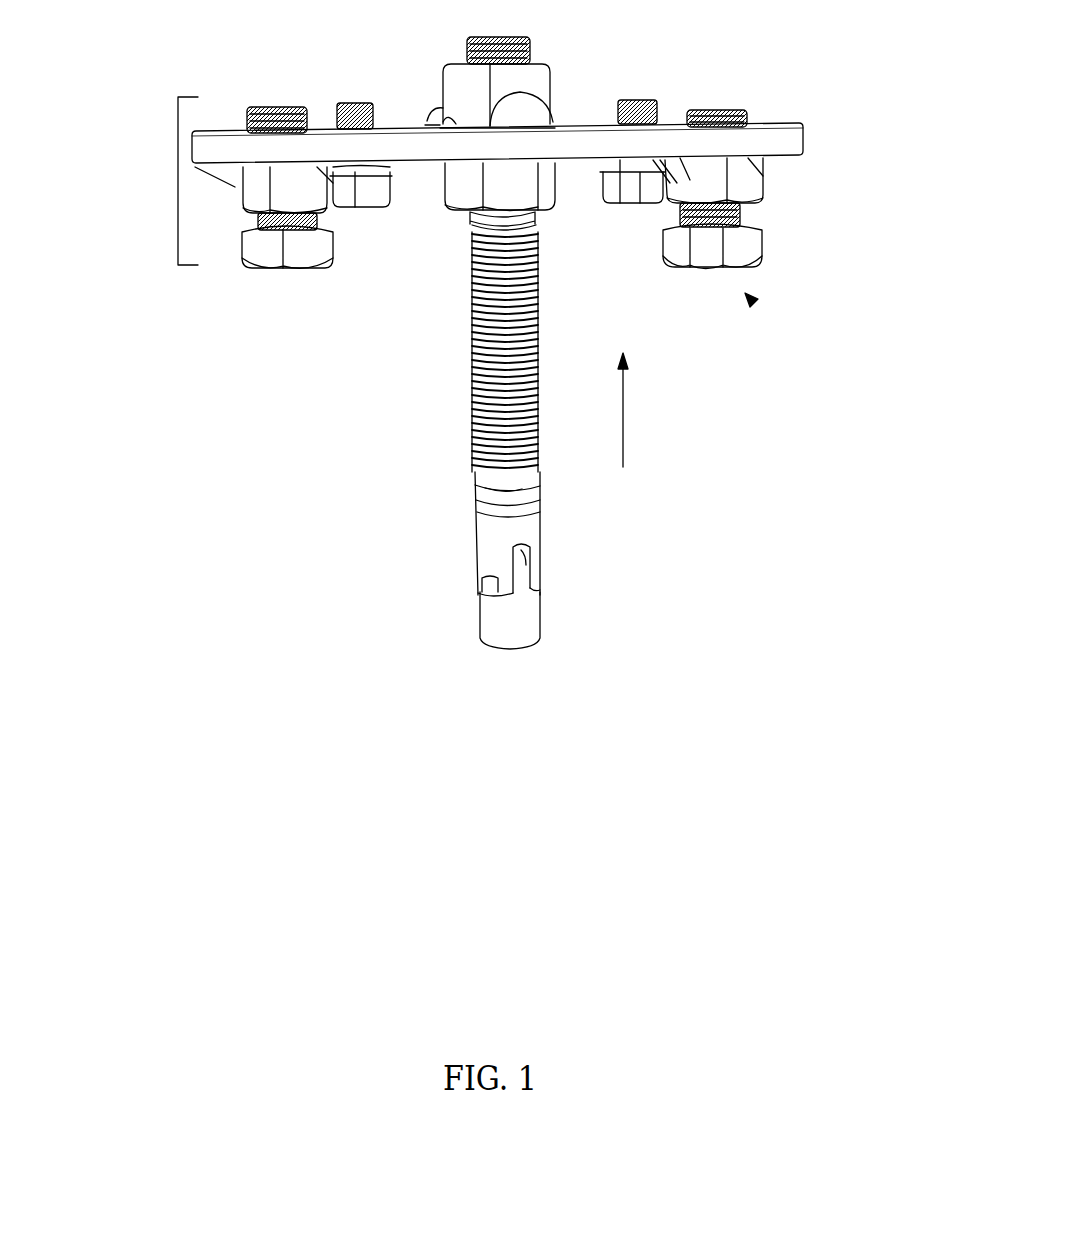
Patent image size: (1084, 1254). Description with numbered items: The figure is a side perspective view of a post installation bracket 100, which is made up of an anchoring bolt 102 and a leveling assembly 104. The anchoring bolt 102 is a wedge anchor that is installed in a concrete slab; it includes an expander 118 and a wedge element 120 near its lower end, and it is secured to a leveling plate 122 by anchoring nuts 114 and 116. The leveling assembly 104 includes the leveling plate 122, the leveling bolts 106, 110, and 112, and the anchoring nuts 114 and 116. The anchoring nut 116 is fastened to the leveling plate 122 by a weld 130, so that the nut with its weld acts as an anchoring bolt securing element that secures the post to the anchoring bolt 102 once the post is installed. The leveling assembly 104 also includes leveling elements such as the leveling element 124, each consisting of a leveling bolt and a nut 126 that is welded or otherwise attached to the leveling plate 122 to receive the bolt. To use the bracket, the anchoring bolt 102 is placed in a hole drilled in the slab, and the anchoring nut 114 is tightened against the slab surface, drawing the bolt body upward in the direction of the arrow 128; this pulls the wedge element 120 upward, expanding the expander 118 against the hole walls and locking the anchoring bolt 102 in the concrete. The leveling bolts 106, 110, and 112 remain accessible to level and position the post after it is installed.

The post installation bracket 100 is at (757, 985).
The anchoring bolt 102 is at (403, 426).
The leveling assembly 104 is at (178, 186).
The leveling bolt 106 is at (265, 266).
The leveling bolt 110 is at (655, 103).
The leveling bolt 112 is at (352, 100).
The anchoring nut 114 is at (448, 193).
The anchoring nut 116 is at (437, 78).
The expander 118 is at (538, 548).
The wedge element 120 is at (540, 625).
The leveling plate 122 is at (778, 118).
The leveling element 124 is at (752, 302).
The nut 126 is at (763, 193).
The arrow 128 is at (623, 437).
The weld 130 is at (430, 118).